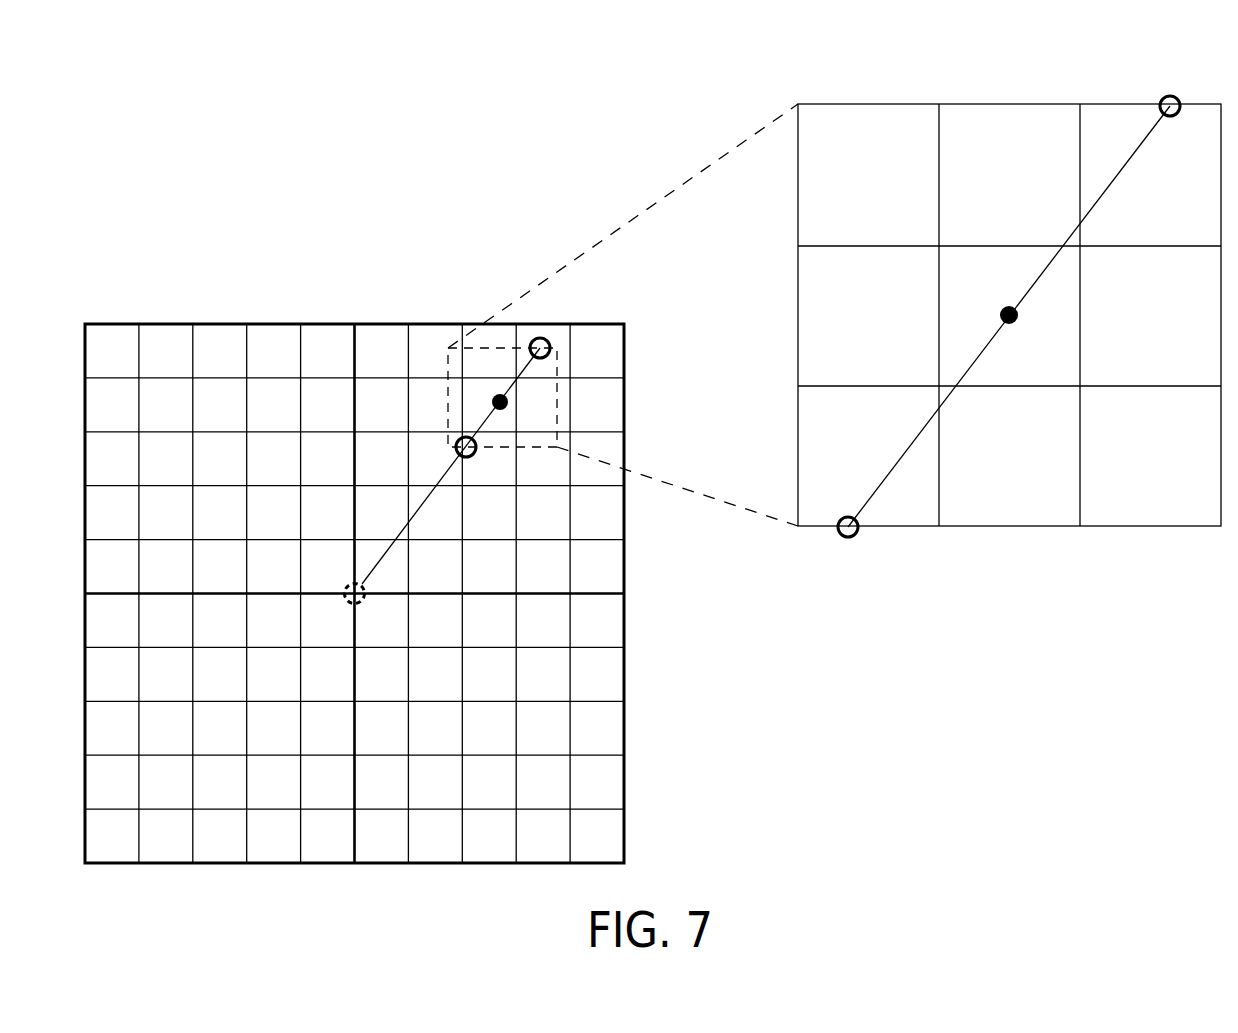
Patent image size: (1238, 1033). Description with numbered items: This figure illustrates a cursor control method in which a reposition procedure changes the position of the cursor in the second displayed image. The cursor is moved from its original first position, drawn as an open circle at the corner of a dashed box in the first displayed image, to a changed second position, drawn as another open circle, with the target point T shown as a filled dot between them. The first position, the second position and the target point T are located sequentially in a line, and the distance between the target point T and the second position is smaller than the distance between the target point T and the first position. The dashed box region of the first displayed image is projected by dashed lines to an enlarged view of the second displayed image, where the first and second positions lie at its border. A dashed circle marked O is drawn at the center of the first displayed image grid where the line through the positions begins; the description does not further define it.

The target point T is at (745, 346).
The origin O is at (344, 607).